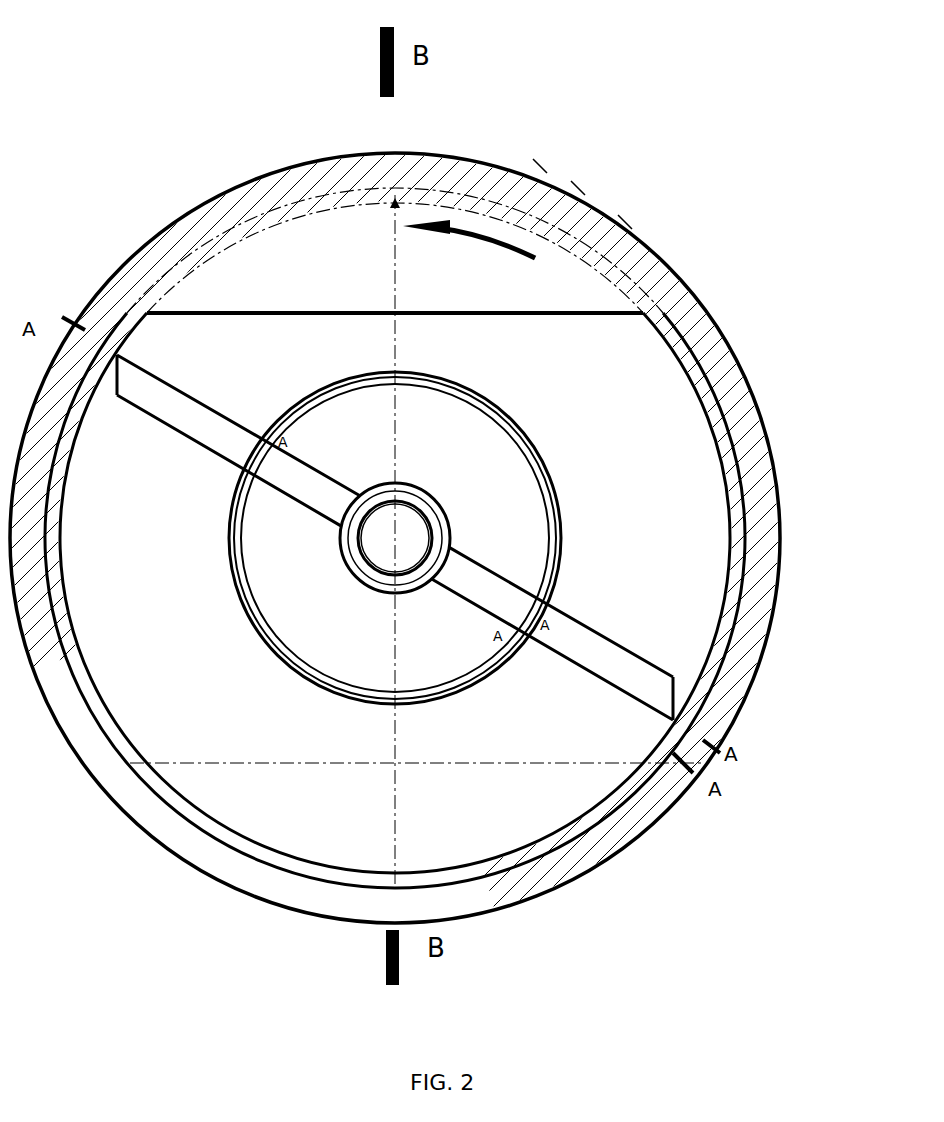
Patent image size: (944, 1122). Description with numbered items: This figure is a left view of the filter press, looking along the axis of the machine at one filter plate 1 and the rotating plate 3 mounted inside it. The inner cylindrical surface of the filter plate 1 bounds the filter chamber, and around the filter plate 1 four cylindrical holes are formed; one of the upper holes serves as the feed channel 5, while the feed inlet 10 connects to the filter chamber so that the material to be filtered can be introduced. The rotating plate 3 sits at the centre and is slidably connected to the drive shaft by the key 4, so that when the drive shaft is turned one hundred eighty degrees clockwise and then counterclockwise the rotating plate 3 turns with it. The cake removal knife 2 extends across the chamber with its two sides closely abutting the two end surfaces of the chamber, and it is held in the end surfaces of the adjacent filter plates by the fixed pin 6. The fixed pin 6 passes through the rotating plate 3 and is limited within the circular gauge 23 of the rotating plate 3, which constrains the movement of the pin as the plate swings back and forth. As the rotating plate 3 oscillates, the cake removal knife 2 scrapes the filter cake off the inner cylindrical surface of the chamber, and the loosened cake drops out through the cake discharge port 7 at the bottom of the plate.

The filter plate 1 is at (548, 270).
The cake removal knife 2 is at (330, 480).
The rotating plate 3 is at (580, 357).
The key 4 is at (433, 507).
The feed channel 5 is at (417, 533).
The fixed pin 6 is at (552, 587).
The cake discharge port 7 is at (258, 875).
The feed inlet 10 is at (395, 538).
The circular gauge 23 is at (913, 1002).